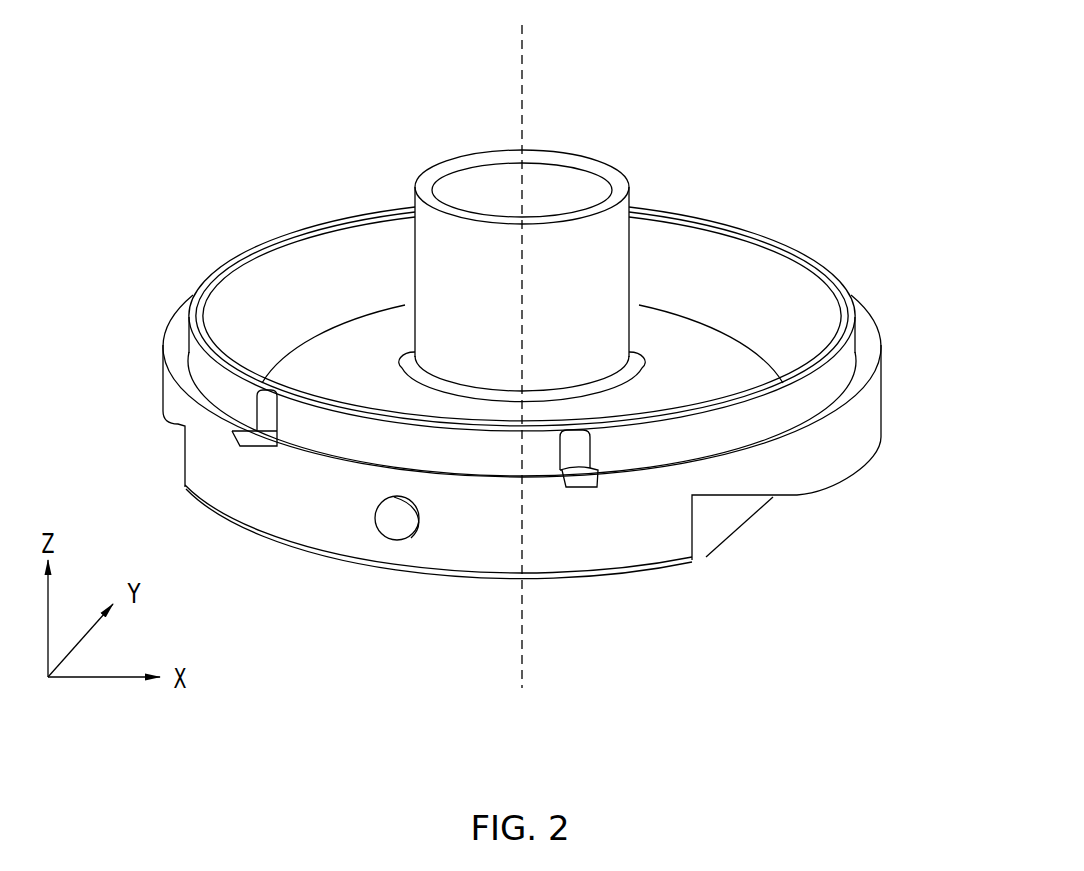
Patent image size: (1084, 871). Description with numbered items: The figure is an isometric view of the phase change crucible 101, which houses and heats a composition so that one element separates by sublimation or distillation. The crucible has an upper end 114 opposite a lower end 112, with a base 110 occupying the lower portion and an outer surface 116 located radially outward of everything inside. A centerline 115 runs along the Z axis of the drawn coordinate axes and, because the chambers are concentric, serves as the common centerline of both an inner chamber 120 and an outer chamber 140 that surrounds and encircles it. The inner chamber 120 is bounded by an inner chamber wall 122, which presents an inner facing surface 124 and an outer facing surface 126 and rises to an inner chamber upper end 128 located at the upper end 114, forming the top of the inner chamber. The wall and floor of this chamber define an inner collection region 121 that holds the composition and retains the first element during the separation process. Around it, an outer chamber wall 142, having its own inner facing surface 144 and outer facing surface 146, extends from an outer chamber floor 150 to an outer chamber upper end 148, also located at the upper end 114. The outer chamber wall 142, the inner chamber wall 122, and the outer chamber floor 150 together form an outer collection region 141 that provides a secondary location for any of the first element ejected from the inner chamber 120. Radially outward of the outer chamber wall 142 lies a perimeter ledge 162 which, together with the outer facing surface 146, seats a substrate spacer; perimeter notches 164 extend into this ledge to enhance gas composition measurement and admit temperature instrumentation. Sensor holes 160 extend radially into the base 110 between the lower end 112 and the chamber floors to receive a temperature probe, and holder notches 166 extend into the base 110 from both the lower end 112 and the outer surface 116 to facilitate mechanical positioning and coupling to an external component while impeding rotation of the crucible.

The phase change crucible 101 is at (804, 122).
The base 110 is at (642, 543).
The lower end 112 is at (422, 607).
The upper end 114 is at (637, 142).
The centerline 115 is at (527, 66).
The outer surface 116 is at (868, 417).
The inner chamber 120 is at (640, 213).
The inner collection region 121 is at (453, 190).
The inner chamber wall 122 is at (636, 252).
The inner facing surface 124 is at (552, 188).
The outer facing surface 126 is at (607, 318).
The inner chamber upper end 128 is at (615, 187).
The outer chamber 140 is at (530, 310).
The outer collection region 141 is at (298, 308).
The outer chamber wall 142 is at (486, 299).
The inner facing surface 144 is at (238, 303).
The outer facing surface 146 is at (212, 380).
The outer chamber upper end 148 is at (840, 300).
The outer chamber floor 150 is at (700, 390).
The sensor holes 160 is at (397, 523).
The perimeter ledge 162 is at (173, 358).
The perimeter notches 164 is at (236, 436).
The holder notches 166 is at (727, 512).